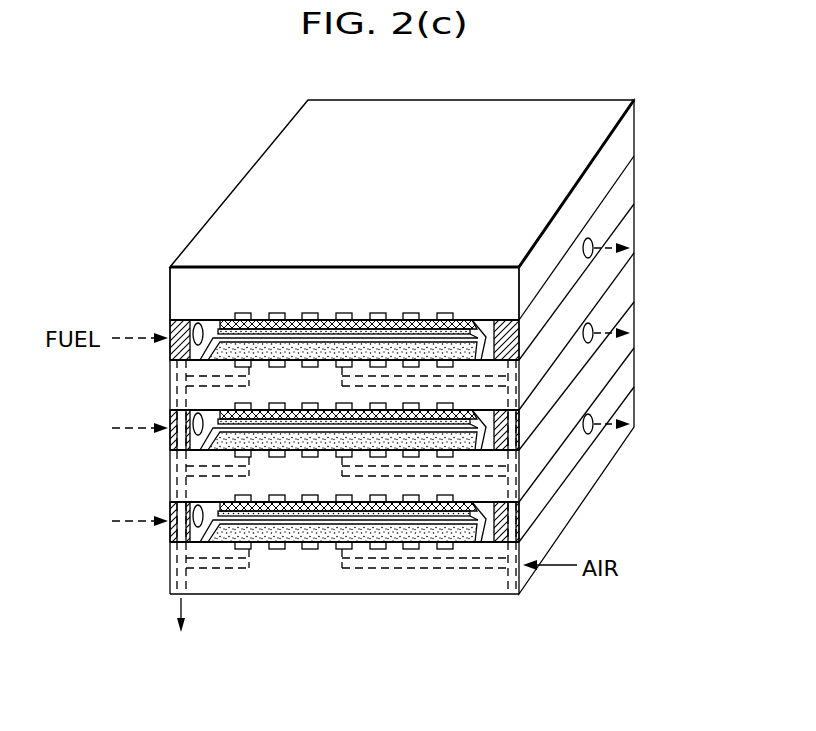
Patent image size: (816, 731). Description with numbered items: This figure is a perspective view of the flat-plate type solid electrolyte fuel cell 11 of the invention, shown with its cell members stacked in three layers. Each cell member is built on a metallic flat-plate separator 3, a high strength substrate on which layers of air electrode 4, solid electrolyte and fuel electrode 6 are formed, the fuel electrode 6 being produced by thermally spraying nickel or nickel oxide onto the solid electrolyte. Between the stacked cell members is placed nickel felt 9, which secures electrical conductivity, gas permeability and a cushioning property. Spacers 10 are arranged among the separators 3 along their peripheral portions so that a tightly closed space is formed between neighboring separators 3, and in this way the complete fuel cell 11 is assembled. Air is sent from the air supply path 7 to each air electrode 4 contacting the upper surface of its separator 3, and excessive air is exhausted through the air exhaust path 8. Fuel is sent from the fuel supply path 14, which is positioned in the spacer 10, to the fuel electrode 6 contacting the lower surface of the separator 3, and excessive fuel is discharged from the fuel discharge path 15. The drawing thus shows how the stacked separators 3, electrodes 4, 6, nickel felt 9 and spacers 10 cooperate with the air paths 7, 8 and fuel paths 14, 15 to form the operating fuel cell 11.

The separator 3 is at (623, 141).
The air electrode 4 is at (433, 350).
The fuel electrode 6 is at (300, 320).
The air supply path 7 is at (508, 565).
The air exhaust path 8 is at (226, 566).
The nickel felt 9 is at (326, 331).
The spacer 10 is at (621, 187).
The flat-plate type solid electrolyte fuel cell 11 is at (236, 182).
The fuel supply path 14 is at (193, 325).
The fuel discharge path 15 is at (591, 258).